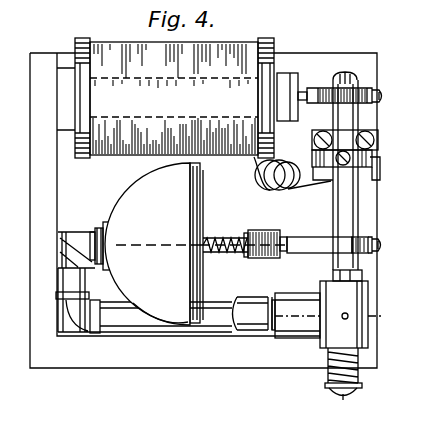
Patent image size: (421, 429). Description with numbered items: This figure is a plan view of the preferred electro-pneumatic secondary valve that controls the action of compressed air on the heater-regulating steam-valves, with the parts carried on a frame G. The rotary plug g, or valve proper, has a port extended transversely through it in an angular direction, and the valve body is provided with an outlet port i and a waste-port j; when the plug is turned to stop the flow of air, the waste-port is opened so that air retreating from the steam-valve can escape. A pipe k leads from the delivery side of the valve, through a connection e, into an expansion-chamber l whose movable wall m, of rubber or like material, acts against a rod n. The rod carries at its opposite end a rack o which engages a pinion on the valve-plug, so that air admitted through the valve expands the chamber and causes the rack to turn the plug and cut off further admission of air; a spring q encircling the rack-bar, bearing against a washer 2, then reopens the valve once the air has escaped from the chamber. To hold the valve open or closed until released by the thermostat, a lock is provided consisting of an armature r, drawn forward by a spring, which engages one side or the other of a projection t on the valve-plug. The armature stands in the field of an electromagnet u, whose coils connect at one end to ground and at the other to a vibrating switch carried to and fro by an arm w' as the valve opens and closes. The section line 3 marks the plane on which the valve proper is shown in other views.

The frame G is at (212, 210).
The electromagnet u is at (174, 98).
The armature r is at (289, 82).
The projection t is at (311, 96).
The arm w' is at (357, 155).
The pipe k is at (82, 238).
The nipple e is at (97, 239).
The expansion-chamber l is at (152, 244).
The movable wall m is at (203, 202).
The rod n is at (228, 235).
The washer 2 is at (225, 257).
The spring q is at (241, 257).
The rack o is at (290, 245).
The rotary plug g is at (333, 276).
The waste-port j is at (345, 311).
The outlet port i is at (295, 322).
The section line 3 is at (333, 317).